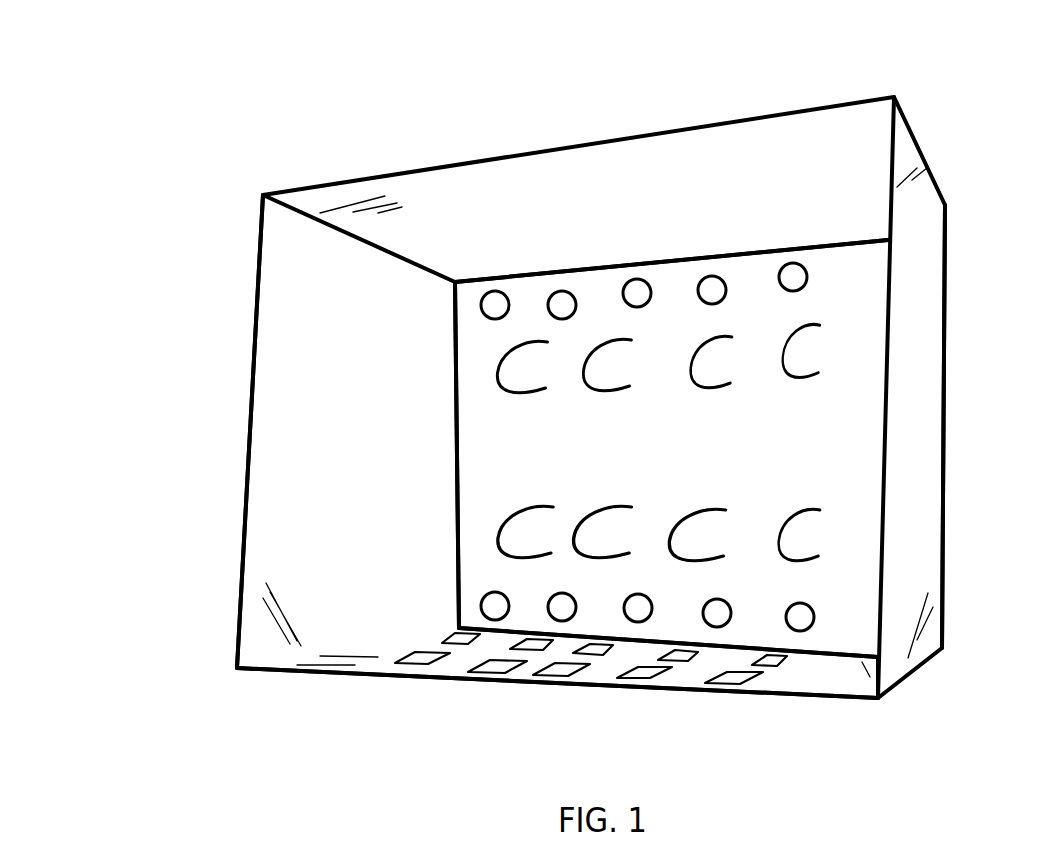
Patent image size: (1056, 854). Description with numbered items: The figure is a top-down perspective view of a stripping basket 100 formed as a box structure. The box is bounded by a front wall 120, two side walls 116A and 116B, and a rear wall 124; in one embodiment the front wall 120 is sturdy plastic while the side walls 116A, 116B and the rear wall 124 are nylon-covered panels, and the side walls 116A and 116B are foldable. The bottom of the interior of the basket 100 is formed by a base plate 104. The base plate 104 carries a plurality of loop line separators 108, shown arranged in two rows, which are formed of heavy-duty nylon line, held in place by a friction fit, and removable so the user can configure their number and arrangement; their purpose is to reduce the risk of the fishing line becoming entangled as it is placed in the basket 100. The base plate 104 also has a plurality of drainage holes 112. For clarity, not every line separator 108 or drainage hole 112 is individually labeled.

The stripping basket 100 is at (330, 83).
The base plate 104 is at (492, 464).
The line separator 108 is at (808, 388).
The drainage hole 112 is at (808, 280).
The side wall 116A is at (273, 457).
The side wall 116B is at (921, 480).
The front wall 120 is at (796, 675).
The rear wall 124 is at (762, 148).